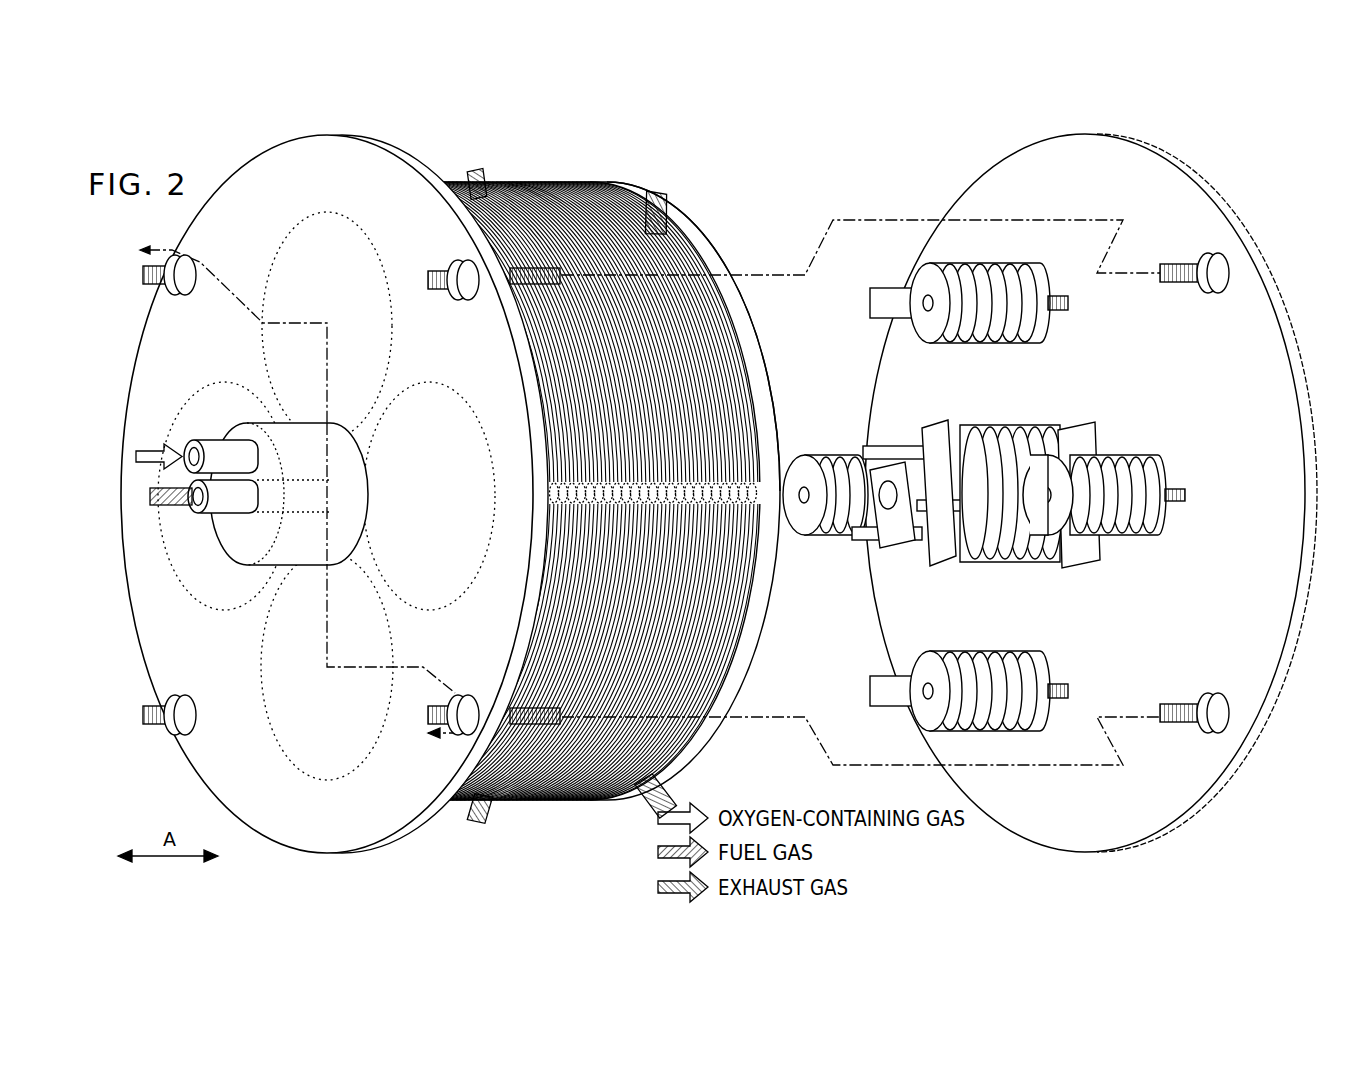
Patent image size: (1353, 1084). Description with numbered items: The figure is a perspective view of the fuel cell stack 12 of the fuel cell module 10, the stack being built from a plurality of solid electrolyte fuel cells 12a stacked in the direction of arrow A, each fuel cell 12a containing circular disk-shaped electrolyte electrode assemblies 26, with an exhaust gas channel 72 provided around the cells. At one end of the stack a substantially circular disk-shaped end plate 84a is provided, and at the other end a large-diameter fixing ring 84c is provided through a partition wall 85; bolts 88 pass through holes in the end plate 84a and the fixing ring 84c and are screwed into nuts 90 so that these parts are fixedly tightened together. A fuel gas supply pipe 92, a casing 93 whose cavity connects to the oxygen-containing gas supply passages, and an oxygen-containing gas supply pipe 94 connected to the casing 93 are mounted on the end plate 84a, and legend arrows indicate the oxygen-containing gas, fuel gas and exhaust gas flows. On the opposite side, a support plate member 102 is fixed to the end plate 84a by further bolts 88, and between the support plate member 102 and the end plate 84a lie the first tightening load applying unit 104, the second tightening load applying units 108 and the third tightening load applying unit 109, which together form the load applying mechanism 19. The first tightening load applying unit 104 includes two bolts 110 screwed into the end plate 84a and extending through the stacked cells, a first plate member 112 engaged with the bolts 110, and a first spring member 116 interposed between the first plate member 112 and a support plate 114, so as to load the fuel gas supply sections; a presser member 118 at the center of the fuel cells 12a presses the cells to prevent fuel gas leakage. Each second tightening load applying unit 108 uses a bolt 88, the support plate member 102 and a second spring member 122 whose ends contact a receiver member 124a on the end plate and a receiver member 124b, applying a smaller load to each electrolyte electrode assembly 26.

The fuel cell module 10 is at (105, 226).
The fuel cell stack 12 is at (530, 180).
The fuel cell 12a is at (540, 808).
The load applying mechanism 19 is at (1246, 353).
The electrolyte electrode assembly 26 is at (428, 386).
The exhaust gas channel 72 is at (497, 828).
The end plate 84a is at (424, 168).
The fixing ring 84c is at (636, 184).
The partition wall 85 is at (704, 268).
The bolt 88 is at (430, 714).
The nut 90 is at (462, 694).
The fuel gas supply pipe 92 is at (236, 514).
The casing 93 is at (296, 570).
The oxygen-containing gas supply pipe 94 is at (210, 440).
The support plate member 102 is at (1196, 190).
The first tightening load applying unit 104 is at (944, 565).
The second tightening load applying unit 108 is at (1046, 321).
The third tightening load applying unit 109 is at (918, 416).
The bolt 110 is at (898, 545).
The first plate member 112 is at (952, 428).
The support plate 114 is at (1072, 566).
The first spring member 116 is at (1004, 428).
The presser member 118 is at (880, 452).
The second spring member 122 is at (1122, 536).
The receiver member 124a is at (1044, 562).
The receiver member 124b is at (1150, 460).